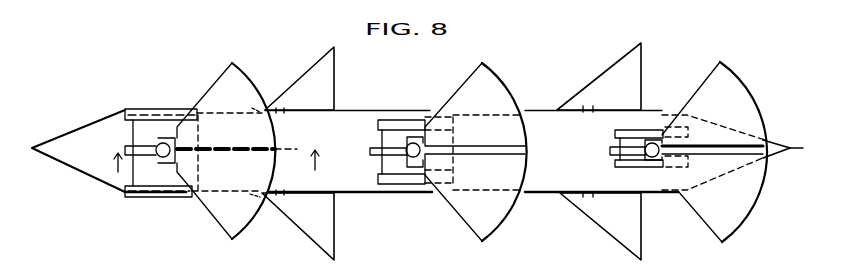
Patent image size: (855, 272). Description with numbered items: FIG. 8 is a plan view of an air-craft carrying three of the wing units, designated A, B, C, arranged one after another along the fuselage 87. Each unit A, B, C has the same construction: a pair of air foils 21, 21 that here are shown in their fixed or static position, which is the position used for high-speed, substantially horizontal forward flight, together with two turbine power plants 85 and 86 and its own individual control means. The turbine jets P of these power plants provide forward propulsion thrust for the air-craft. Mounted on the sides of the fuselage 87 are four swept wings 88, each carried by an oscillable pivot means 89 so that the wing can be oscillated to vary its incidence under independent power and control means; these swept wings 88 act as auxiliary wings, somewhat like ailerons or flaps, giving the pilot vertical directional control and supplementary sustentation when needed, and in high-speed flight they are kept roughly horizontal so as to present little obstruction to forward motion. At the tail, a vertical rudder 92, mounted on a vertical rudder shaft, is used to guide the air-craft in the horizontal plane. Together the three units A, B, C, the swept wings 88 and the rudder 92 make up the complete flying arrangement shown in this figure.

The air foil 21 is at (234, 72).
The turbine power plant 85 is at (132, 108).
The turbine power plant 86 is at (127, 195).
The fuselage 87 is at (77, 172).
The swept wing 88 is at (605, 232).
The oscillable pivot means 89 is at (280, 115).
The vertical rudder 92 is at (800, 152).
The unit A is at (164, 158).
The unit B is at (412, 143).
The unit C is at (655, 143).
The turbine jet P is at (205, 116).